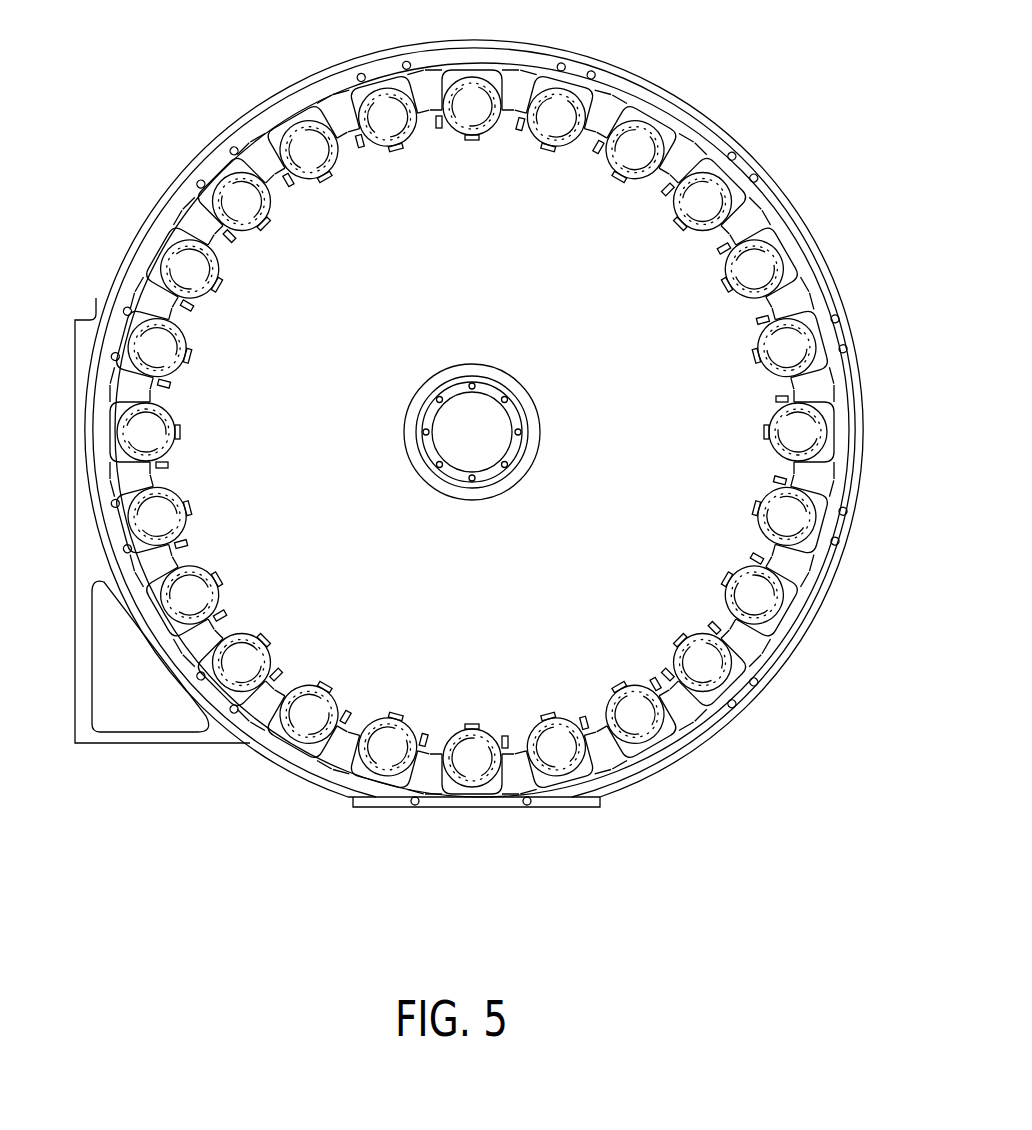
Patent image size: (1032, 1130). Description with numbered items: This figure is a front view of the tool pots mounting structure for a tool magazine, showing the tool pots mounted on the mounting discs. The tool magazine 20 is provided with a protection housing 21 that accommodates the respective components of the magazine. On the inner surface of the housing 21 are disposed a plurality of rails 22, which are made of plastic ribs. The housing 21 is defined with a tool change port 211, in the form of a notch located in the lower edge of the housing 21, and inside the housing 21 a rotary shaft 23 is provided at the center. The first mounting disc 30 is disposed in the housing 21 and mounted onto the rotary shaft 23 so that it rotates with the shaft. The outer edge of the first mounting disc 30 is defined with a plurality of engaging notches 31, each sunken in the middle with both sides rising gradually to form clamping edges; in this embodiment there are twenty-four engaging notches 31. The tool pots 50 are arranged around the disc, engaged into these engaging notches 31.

The tool magazine 20 is at (160, 762).
The protection housing 21 is at (740, 148).
The rails 22 is at (667, 113).
The rotary shaft 23 is at (518, 388).
The first mounting disc 30 is at (700, 703).
The engaging notches 31 is at (722, 637).
The tool pots 50 is at (496, 136).
The tool change port 211 is at (460, 827).